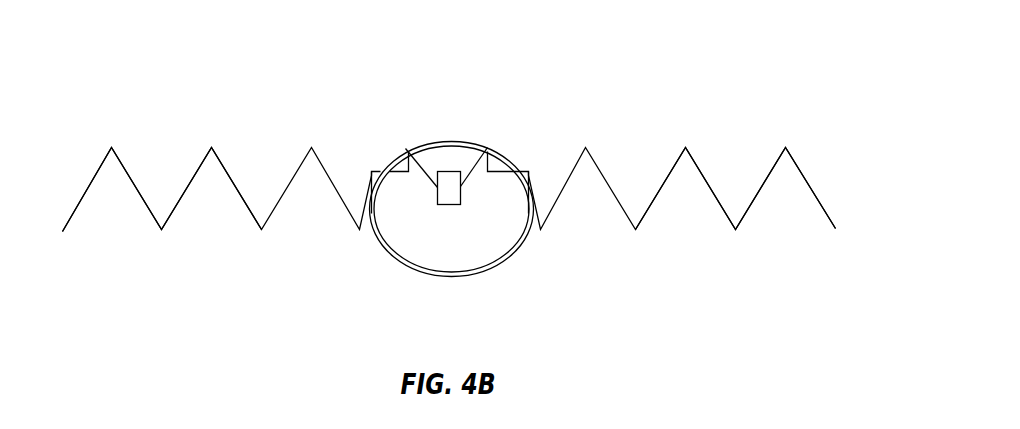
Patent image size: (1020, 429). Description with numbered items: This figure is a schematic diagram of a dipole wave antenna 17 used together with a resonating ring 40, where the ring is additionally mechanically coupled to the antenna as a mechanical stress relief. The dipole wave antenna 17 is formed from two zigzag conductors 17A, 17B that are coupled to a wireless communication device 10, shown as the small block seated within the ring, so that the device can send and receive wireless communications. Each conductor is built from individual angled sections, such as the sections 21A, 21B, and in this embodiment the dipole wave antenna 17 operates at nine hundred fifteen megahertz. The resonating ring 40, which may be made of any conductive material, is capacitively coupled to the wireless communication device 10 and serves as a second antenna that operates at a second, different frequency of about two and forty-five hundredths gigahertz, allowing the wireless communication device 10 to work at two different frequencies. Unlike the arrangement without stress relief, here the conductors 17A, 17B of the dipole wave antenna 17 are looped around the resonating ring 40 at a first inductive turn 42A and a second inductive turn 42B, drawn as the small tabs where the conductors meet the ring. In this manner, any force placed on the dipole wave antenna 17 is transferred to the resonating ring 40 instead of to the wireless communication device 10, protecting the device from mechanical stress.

The dipole wave antenna 17 is at (332, 80).
The conductor 17A is at (222, 192).
The conductor 17B is at (675, 189).
The section 21A is at (122, 165).
The section 21B is at (697, 162).
The resonating ring 40 is at (511, 251).
The wireless communication device 10 is at (452, 170).
The first inductive turn 42A is at (410, 151).
The second inductive turn 42B is at (487, 150).